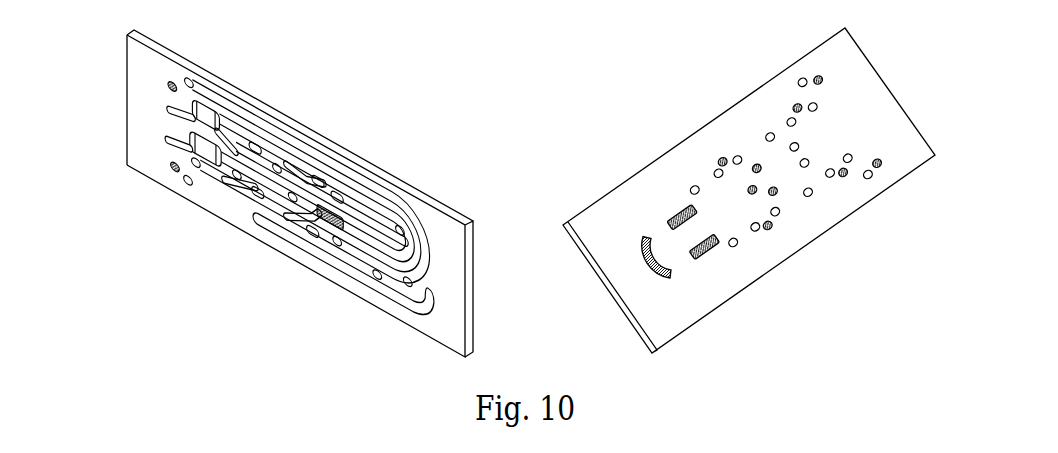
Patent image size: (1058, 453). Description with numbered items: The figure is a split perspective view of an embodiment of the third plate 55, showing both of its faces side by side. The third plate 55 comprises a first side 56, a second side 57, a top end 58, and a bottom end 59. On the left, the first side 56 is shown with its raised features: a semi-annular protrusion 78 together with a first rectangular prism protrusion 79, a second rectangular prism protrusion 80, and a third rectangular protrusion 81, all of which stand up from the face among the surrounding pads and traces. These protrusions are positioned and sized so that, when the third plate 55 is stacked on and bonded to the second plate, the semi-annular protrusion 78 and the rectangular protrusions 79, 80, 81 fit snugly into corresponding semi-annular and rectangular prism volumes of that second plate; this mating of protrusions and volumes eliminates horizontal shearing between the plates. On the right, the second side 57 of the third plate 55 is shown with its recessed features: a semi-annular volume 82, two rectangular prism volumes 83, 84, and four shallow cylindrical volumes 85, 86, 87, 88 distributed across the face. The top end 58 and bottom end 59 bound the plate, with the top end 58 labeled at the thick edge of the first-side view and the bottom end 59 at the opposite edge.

The third plate 55 is at (545, 98).
The first side 56 is at (435, 332).
The second side 57 is at (913, 157).
The top end 58 is at (476, 300).
The bottom end 59 is at (122, 100).
The semi-annular protrusion 78 is at (343, 257).
The first rectangular prism protrusion 79 is at (387, 233).
The second rectangular prism protrusion 80 is at (330, 217).
The third rectangular protrusion 81 is at (194, 144).
The semi-annular volume 82 is at (664, 281).
The rectangular prism volume 83 is at (704, 246).
The rectangular prism volume 84 is at (682, 216).
The shallow cylindrical volume 85 is at (768, 226).
The shallow cylindrical volume 86 is at (843, 173).
The shallow cylindrical volume 87 is at (723, 162).
The shallow cylindrical volume 88 is at (797, 108).